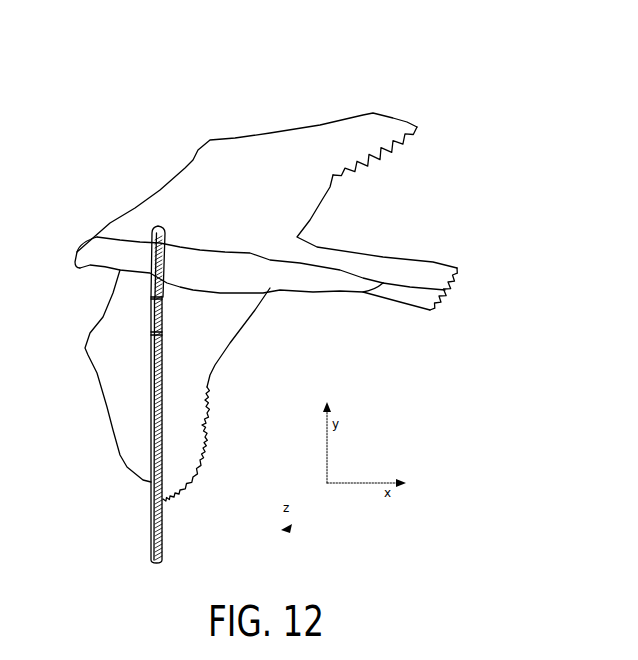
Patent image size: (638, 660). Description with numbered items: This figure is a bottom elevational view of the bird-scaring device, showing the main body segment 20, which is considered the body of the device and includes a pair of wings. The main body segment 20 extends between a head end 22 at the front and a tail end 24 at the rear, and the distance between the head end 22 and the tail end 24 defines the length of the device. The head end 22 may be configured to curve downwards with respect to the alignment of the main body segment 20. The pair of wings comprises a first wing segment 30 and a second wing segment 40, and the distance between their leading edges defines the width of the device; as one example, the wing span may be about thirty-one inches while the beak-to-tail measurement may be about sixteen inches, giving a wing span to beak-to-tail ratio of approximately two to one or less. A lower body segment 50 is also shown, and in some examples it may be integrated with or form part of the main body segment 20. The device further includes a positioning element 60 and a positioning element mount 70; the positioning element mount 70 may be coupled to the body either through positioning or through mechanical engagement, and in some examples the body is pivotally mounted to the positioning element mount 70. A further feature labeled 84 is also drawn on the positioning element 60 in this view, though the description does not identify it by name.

The main body segment 20 is at (148, 177).
The head end 22 is at (75, 268).
The tail end 24 is at (457, 273).
The first wing segment 30 is at (100, 350).
The second wing segment 40 is at (275, 148).
The lower body segment 50 is at (275, 285).
The positioning element 60 is at (152, 513).
The positioning element mount 70 is at (160, 294).
The pivot band 84 is at (161, 329).